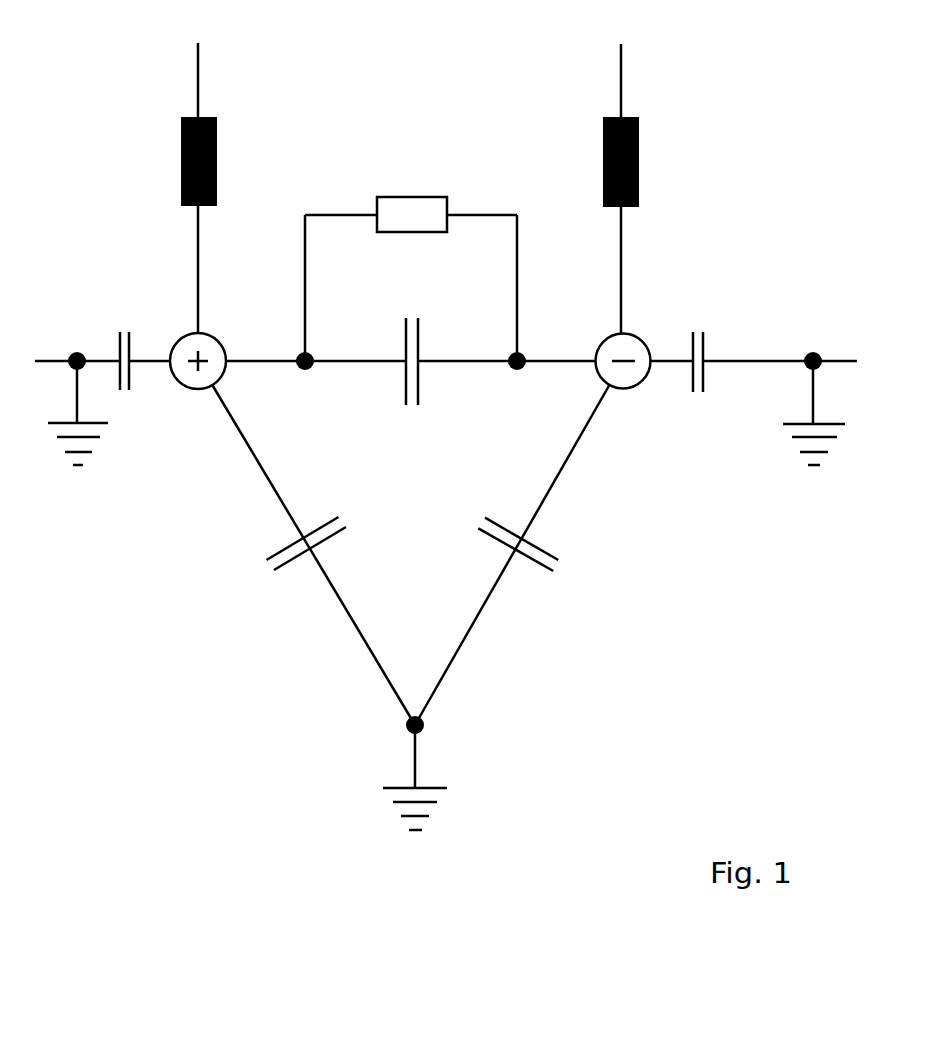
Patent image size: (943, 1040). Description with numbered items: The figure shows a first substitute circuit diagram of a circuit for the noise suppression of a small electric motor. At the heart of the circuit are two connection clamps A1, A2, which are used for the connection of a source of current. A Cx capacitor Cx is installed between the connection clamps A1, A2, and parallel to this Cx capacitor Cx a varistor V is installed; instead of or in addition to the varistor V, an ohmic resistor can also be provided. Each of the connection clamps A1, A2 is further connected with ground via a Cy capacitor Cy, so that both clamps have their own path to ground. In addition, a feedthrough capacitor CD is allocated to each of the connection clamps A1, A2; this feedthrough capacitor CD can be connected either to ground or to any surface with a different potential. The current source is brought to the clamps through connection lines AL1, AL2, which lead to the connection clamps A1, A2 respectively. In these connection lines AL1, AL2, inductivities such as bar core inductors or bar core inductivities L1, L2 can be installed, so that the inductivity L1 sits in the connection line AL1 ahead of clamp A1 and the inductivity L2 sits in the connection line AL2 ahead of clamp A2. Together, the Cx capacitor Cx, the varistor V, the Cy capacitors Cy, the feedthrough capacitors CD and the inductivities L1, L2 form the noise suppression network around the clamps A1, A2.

The connection line AL1 is at (235, 67).
The connection line AL2 is at (659, 67).
The bar core inductivity L1 is at (223, 161).
The bar core inductivity L2 is at (646, 162).
The connection clamp A1 is at (215, 345).
The connection clamp A2 is at (607, 345).
The varistor V is at (411, 258).
The Cx capacitor Cx is at (434, 343).
The feedthrough capacitor CD is at (431, 382).
The Cy capacitor Cy is at (418, 564).